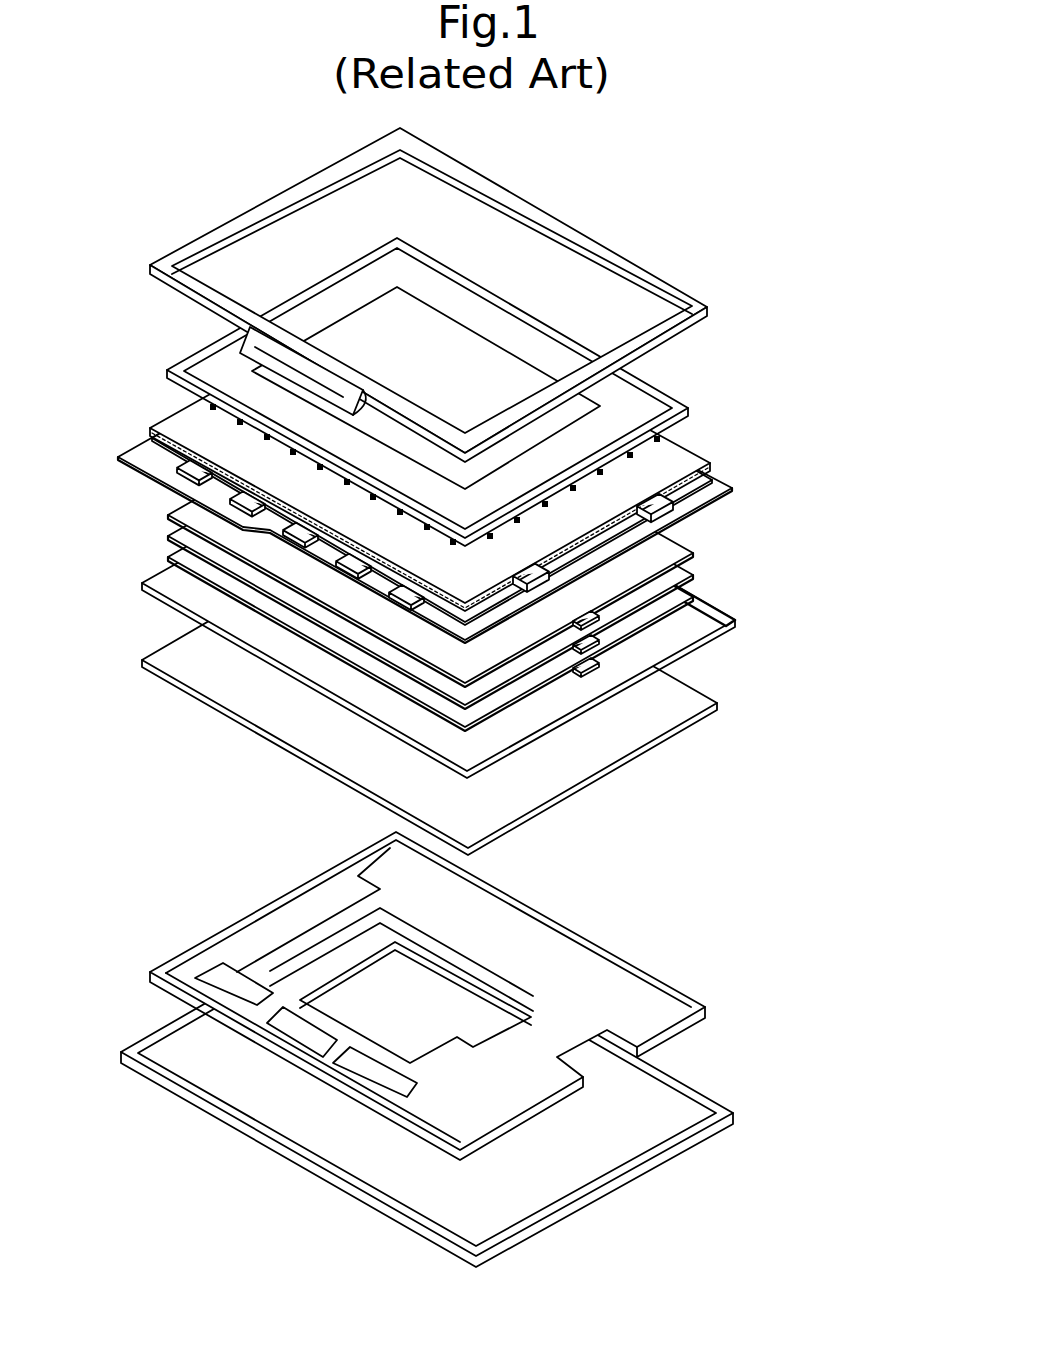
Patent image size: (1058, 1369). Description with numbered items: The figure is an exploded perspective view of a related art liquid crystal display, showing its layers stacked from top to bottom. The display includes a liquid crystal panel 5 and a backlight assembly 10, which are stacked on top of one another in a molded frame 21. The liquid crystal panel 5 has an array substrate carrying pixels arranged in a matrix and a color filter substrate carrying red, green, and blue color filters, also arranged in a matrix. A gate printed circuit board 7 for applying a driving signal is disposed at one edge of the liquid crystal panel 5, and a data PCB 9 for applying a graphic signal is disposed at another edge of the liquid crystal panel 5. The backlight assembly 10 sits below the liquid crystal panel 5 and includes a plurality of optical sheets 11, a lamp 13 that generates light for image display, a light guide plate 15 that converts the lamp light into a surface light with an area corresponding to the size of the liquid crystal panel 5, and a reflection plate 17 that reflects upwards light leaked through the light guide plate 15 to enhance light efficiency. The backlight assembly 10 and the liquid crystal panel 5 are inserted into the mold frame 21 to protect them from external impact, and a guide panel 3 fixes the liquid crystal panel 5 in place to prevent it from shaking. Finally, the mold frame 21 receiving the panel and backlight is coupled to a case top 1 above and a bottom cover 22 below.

The case top 1 is at (668, 282).
The guide panel 3 is at (687, 402).
The liquid crystal panel 5 is at (688, 463).
The gate printed circuit board 7 is at (723, 492).
The data PCB 9 is at (128, 453).
The backlight assembly 10 is at (444, 620).
The optical sheets 11 is at (105, 663).
The lamp 13 is at (735, 620).
The light guide plate 15 is at (693, 630).
The reflection plate 17 is at (693, 717).
The mold frame 21 is at (670, 1010).
The bottom cover 22 is at (722, 1128).